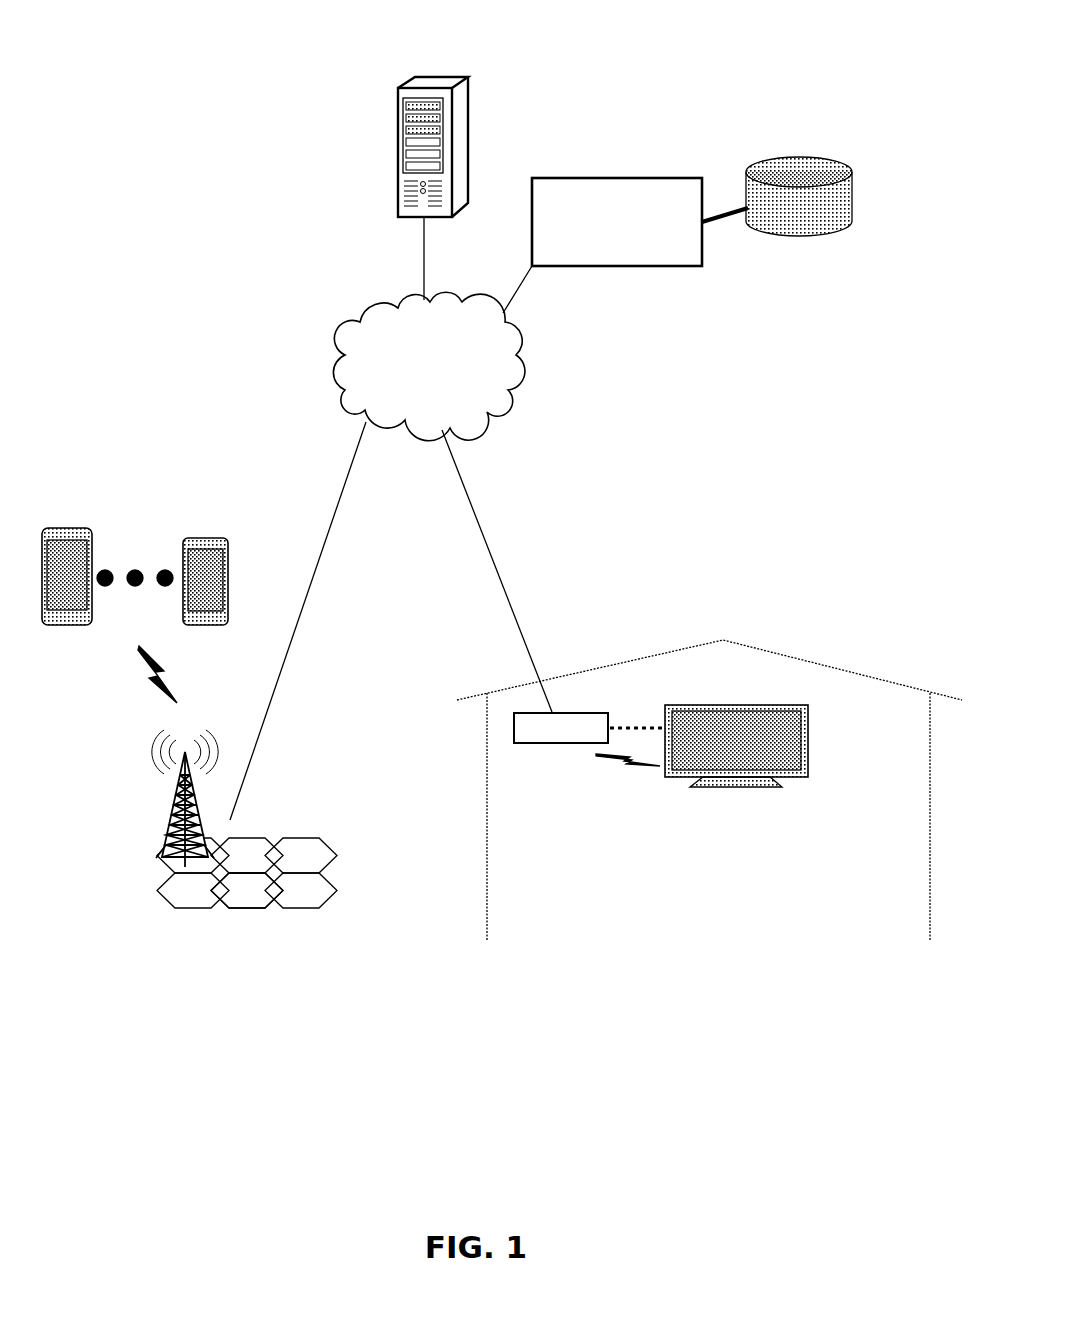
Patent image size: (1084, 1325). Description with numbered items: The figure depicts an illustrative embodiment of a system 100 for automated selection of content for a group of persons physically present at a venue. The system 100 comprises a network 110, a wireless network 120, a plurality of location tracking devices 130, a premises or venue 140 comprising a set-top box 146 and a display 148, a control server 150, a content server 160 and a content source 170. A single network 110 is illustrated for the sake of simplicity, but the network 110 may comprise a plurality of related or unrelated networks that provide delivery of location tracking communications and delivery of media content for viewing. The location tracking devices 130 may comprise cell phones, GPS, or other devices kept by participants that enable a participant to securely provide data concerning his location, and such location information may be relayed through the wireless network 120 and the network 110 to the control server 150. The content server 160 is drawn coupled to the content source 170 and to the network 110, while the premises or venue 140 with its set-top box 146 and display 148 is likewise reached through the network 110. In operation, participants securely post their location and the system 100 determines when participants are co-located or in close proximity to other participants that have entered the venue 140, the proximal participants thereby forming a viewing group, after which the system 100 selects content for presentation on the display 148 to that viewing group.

The system 100 is at (502, 612).
The network 110 is at (429, 366).
The wireless network 120 is at (246, 822).
The location tracking devices 130 is at (73, 528).
The premises or venue 140 is at (723, 640).
The set-top box 146 is at (589, 739).
The display 148 is at (727, 787).
The control server 150 is at (440, 77).
The content server 160 is at (575, 179).
The content source 170 is at (789, 165).